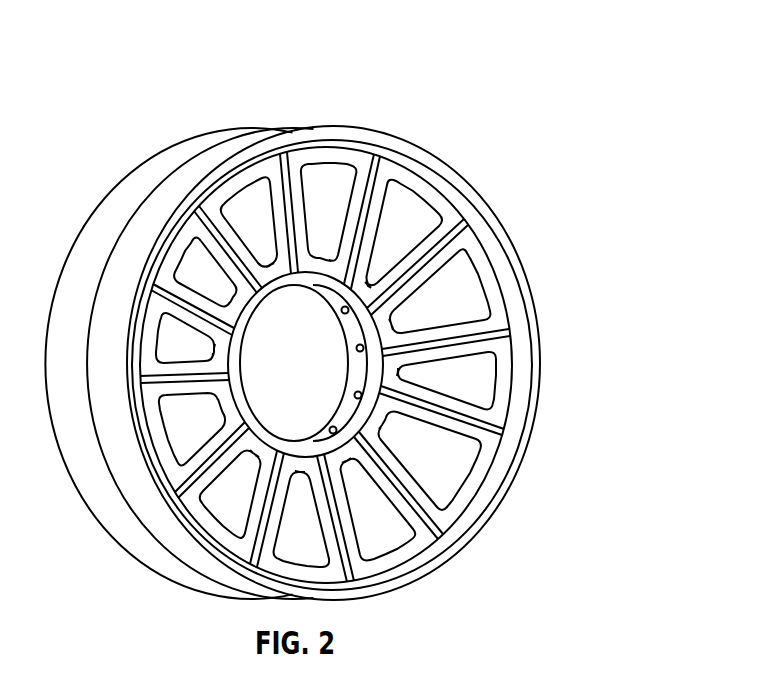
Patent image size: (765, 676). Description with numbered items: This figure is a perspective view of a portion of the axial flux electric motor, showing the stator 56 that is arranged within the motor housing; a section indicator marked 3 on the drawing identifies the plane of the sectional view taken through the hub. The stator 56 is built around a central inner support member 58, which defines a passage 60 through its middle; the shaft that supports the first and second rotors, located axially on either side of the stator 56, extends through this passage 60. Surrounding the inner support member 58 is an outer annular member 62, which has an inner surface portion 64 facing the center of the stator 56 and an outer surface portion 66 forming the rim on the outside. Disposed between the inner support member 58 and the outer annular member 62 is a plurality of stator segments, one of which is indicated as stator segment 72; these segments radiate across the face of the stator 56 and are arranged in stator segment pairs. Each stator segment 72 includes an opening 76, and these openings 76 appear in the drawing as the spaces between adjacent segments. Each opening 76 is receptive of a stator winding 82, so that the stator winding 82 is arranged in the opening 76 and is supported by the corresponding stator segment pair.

The stator 56 is at (326, 314).
The inner support member 58 is at (372, 377).
The passage 60 is at (342, 340).
The outer annular member 62 is at (222, 148).
The inner surface portion 64 is at (425, 168).
The outer surface portion 66 is at (155, 175).
The stator segment 72 is at (290, 254).
The opening 76 is at (222, 218).
The stator winding 82 is at (270, 238).
The section line 3 is at (322, 335).